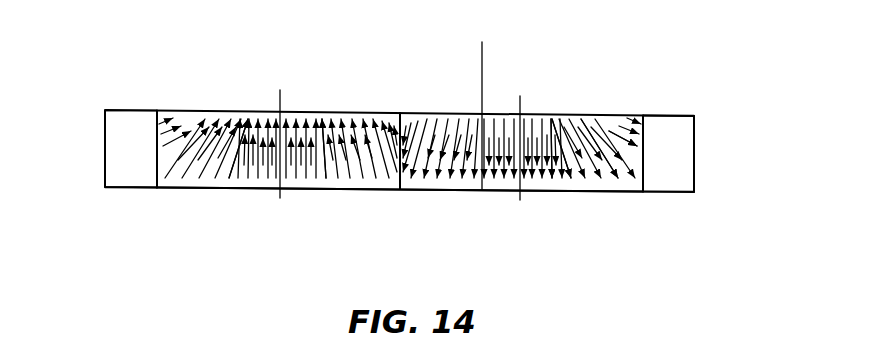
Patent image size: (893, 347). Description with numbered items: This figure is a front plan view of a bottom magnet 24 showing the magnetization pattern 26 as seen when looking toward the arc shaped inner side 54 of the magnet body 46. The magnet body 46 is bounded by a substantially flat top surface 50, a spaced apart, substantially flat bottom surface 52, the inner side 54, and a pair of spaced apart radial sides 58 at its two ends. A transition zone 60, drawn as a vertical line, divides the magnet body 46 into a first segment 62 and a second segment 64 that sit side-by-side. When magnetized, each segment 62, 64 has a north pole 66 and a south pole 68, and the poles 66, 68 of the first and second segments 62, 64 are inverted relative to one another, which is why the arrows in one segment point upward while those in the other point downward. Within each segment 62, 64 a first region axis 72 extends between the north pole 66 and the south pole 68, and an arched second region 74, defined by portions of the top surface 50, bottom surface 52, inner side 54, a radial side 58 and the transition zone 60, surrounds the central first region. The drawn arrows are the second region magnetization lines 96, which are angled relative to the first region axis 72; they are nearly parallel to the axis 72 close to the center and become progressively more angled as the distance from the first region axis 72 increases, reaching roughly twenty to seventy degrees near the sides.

The magnet 24 is at (694, 88).
The magnetization pattern 26 is at (585, 115).
The magnet body 46 is at (695, 178).
The top surface 50 is at (460, 112).
The bottom surface 52 is at (442, 190).
The inner side 54 is at (557, 114).
The radial side 58 is at (115, 143).
The transition zone 60 is at (412, 115).
The first segment 62 is at (326, 110).
The second segment 64 is at (494, 110).
The north pole 66 is at (128, 110).
The south pole 68 is at (120, 188).
The first region axis 72 is at (280, 90).
The second region 74 is at (625, 115).
The second region magnetization lines 96 is at (325, 165).